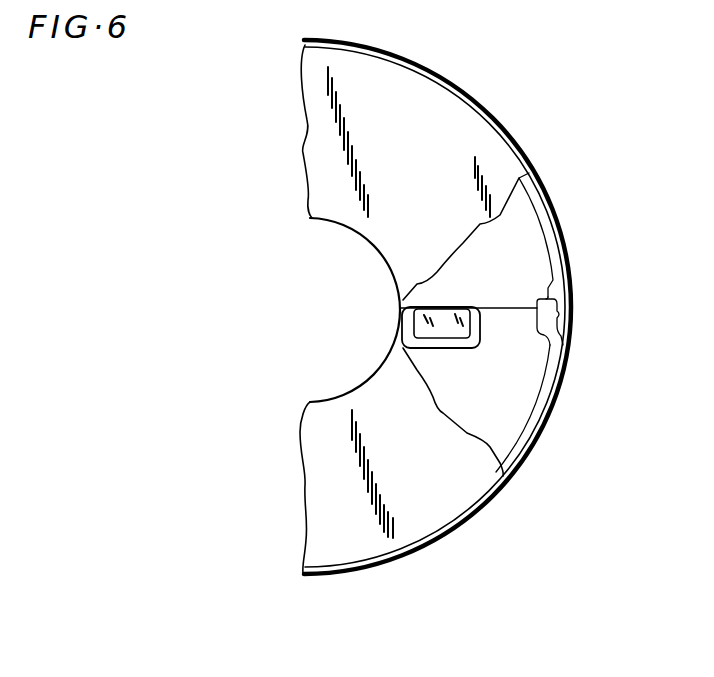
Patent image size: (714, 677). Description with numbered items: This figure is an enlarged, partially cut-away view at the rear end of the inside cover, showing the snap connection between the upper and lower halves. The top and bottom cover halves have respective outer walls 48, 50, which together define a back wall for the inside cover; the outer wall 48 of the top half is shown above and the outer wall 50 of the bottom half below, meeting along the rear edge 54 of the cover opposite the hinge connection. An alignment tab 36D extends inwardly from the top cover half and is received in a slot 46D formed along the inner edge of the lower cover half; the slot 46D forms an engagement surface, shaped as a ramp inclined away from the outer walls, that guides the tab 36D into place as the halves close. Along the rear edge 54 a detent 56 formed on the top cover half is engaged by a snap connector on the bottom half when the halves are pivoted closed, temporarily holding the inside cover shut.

The outer wall 48 is at (449, 118).
The outer wall 50 is at (410, 520).
The rear edge 54 is at (563, 233).
The detent 56 is at (569, 312).
The alignment tab 36D is at (474, 337).
The slot 46D is at (447, 350).